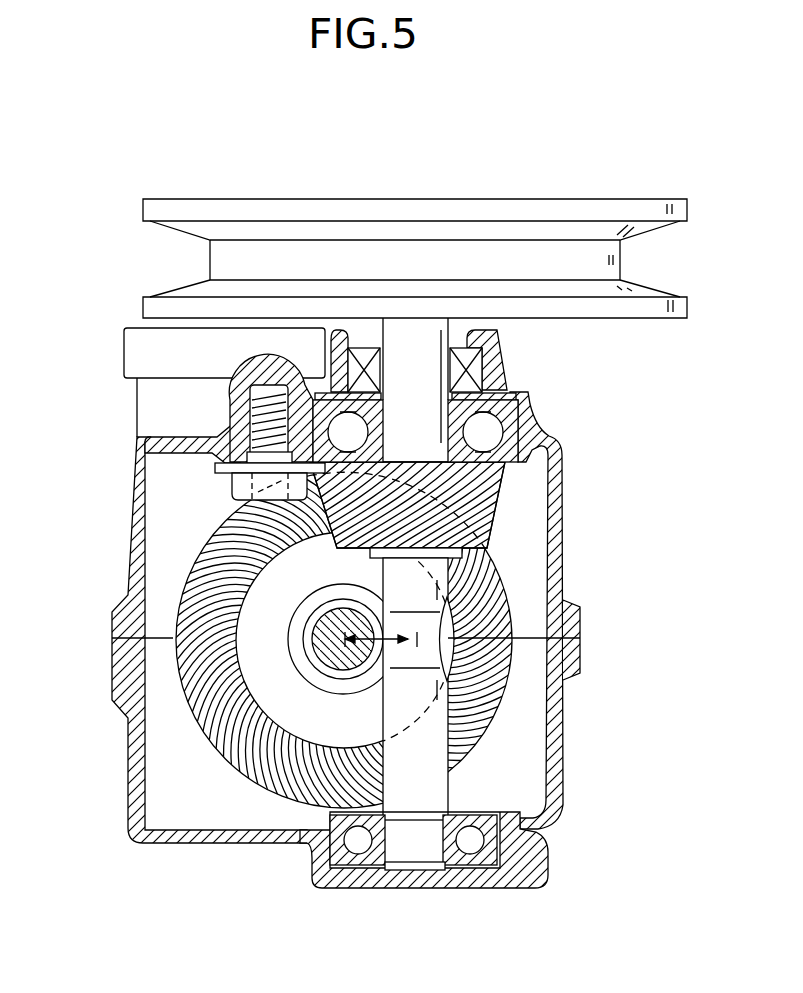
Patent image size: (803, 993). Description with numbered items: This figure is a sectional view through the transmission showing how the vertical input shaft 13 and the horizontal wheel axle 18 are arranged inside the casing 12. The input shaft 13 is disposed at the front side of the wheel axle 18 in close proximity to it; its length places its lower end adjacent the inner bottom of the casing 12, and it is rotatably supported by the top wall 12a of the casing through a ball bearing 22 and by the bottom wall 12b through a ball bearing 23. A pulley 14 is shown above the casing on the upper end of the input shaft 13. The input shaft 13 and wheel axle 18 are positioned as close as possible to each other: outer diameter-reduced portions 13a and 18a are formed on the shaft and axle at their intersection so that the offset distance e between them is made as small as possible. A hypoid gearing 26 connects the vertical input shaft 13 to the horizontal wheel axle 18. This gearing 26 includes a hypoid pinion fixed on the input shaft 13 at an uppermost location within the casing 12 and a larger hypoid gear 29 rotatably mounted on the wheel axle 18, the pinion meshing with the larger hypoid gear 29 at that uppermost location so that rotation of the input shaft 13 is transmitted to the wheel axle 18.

The pulley 14 is at (172, 210).
The casing 12 is at (120, 592).
The top wall 12a is at (322, 375).
The bottom wall 12b is at (530, 848).
The ball bearing 22 is at (511, 392).
The ball bearing 23 is at (432, 866).
The hypoid gearing 26 is at (511, 542).
The input shaft 13 is at (430, 790).
The outer diameter-reduced portion 13a is at (492, 622).
The wheel axle 18 is at (332, 630).
The outer diameter-reduced portion 18a is at (332, 605).
The larger hypoid gear 29 is at (503, 685).
The offset distance e is at (353, 685).